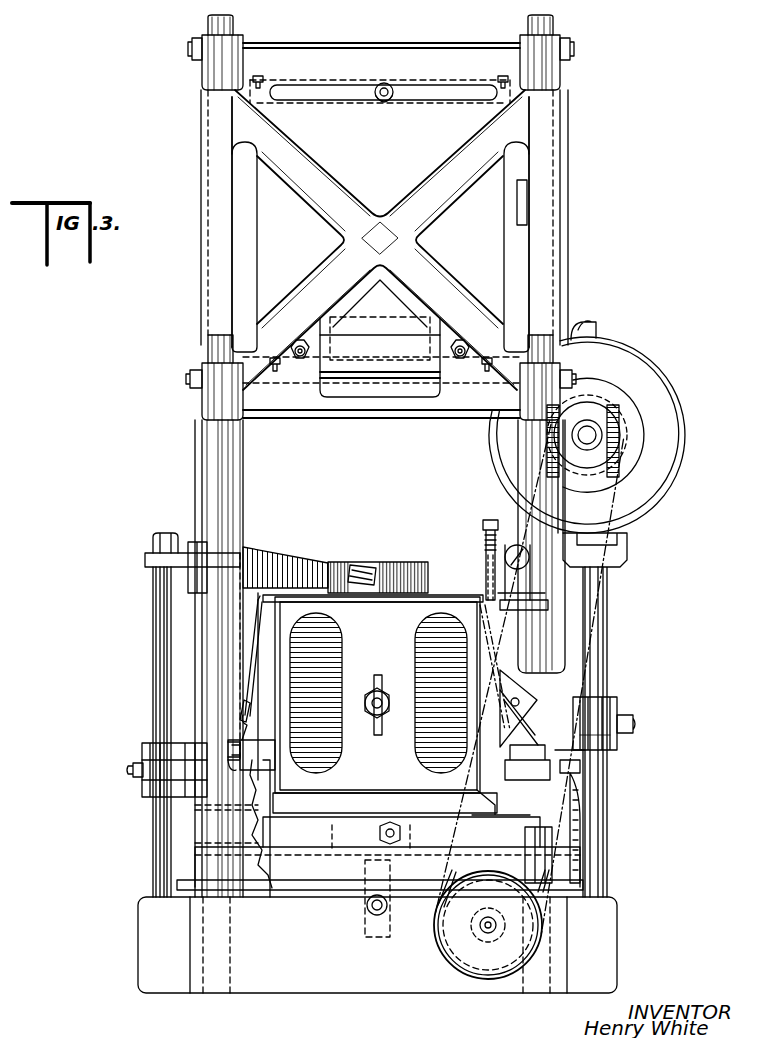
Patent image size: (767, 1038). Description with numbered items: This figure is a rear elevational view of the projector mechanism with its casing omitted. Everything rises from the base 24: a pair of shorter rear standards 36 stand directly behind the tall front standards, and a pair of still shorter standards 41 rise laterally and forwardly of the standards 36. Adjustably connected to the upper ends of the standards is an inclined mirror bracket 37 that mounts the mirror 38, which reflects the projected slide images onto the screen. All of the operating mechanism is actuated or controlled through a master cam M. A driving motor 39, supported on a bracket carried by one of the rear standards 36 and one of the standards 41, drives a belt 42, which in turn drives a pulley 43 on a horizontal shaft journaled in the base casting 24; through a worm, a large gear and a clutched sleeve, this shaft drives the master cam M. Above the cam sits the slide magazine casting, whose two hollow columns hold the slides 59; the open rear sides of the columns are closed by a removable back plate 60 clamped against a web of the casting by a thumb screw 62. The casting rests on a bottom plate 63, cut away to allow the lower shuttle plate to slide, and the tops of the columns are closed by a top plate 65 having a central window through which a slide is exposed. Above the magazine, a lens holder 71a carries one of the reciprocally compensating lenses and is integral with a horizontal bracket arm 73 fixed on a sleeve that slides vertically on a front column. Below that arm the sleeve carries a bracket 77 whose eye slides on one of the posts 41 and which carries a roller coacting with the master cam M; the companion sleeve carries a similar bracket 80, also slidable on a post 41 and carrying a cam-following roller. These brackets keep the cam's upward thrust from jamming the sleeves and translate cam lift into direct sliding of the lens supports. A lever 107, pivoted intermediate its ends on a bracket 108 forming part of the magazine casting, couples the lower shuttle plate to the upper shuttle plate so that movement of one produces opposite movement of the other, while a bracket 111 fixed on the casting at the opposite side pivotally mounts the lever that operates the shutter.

The base 24 is at (289, 982).
The shorter standards 36 is at (215, 470).
The mirror bracket 37 is at (425, 218).
The mirror 38 is at (267, 255).
The driving motor 39 is at (662, 408).
The still shorter standards 41 is at (163, 680).
The belt 42 is at (625, 466).
The pulley 43 is at (460, 940).
The slides 59 is at (430, 655).
The removable back plate 60 is at (378, 693).
The thumb screw 62 is at (378, 722).
The bottom plate 63 is at (390, 797).
The top plate 65 is at (443, 595).
The lens holder 71a is at (355, 562).
The bracket arm 73 is at (283, 562).
The bracket 77 is at (190, 745).
The bracket 80 is at (572, 712).
The lever 107 is at (512, 680).
The bracket 108 is at (525, 735).
The bracket 111 is at (258, 760).
The master cam M is at (265, 885).